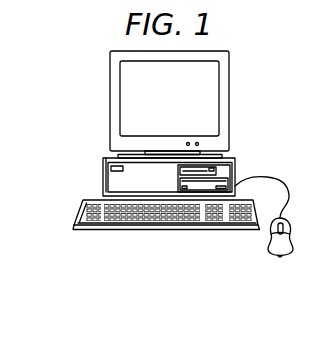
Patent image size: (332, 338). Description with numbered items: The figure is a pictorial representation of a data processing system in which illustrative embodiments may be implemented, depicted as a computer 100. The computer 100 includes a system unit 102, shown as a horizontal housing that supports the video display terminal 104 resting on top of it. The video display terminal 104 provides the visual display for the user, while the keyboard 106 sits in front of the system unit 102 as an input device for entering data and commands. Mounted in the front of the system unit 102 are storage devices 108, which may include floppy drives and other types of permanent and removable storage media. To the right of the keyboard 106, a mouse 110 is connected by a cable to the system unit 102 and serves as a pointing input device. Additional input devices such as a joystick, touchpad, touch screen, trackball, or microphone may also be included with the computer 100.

The computer 100 is at (77, 90).
The system unit 102 is at (103, 172).
The video display terminal 104 is at (231, 100).
The keyboard 106 is at (97, 232).
The storage devices 108 is at (220, 170).
The mouse 110 is at (280, 255).